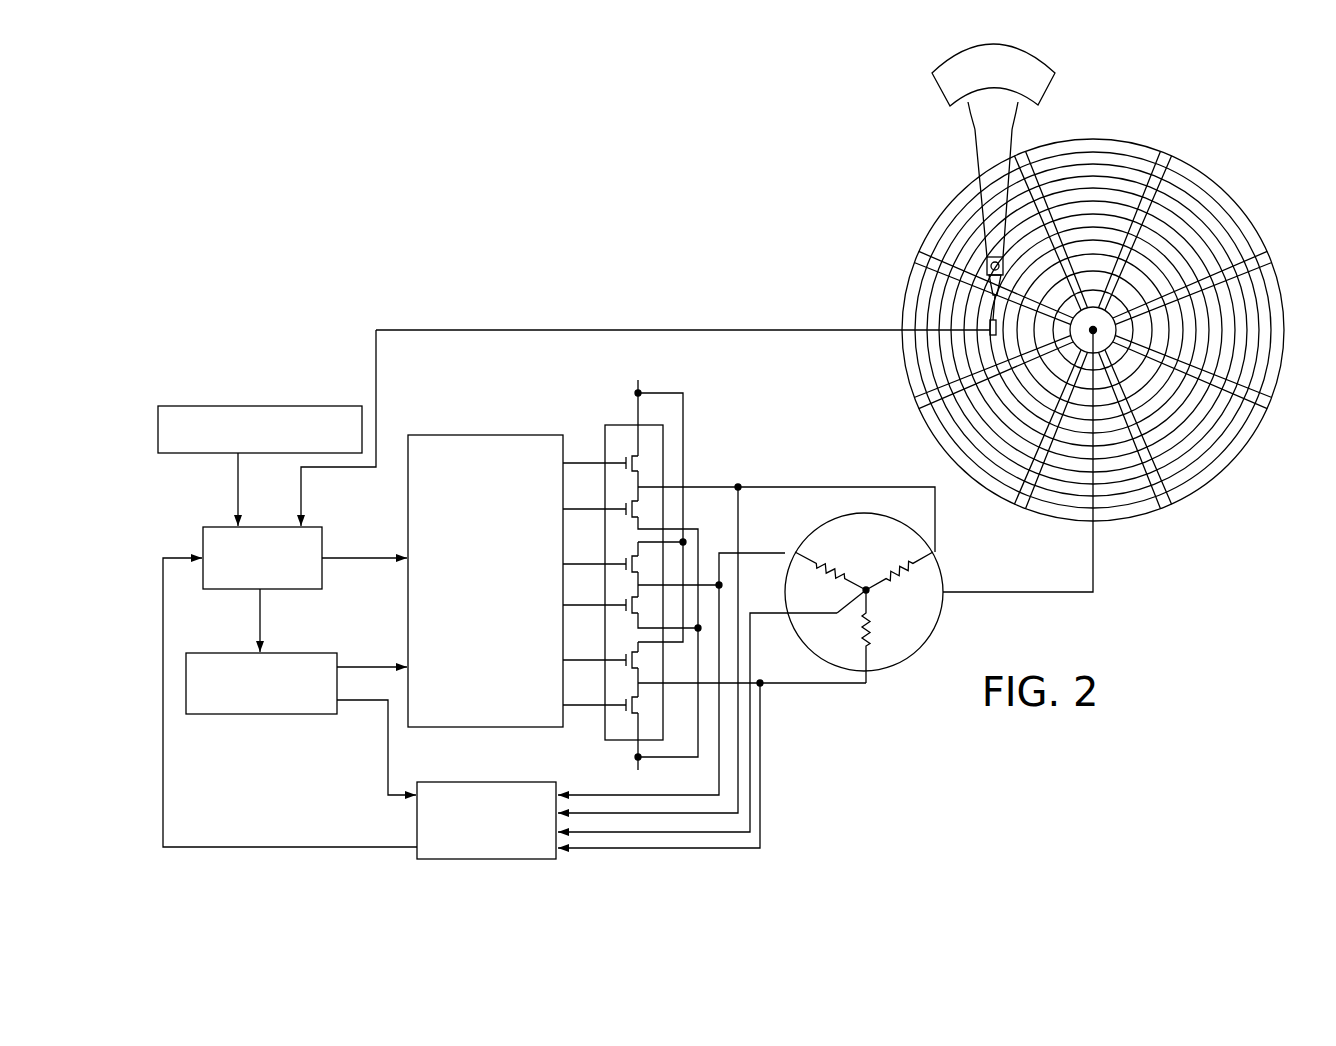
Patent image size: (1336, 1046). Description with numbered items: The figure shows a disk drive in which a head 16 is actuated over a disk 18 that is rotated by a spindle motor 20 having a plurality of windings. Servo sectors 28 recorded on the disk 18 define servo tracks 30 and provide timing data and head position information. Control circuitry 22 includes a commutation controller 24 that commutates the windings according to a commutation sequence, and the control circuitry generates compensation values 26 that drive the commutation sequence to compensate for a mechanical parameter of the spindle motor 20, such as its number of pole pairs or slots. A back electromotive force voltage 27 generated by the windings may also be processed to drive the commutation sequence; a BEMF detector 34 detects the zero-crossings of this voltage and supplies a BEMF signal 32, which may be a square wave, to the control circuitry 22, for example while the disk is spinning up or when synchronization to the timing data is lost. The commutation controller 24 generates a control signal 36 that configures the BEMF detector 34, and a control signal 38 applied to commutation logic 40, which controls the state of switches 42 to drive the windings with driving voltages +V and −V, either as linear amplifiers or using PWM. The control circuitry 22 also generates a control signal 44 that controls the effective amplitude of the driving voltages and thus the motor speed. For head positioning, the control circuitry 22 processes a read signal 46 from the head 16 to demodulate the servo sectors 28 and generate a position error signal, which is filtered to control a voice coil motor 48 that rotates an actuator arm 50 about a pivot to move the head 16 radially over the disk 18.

The head 16 is at (999, 331).
The disk 18 is at (1226, 181).
The spindle motor 20 is at (946, 615).
The control circuitry 22 is at (302, 590).
The commutation controller 24 is at (262, 715).
The compensation values 26 is at (203, 457).
The back electromotive force voltage 27 is at (599, 856).
The servo sectors 28 is at (1164, 155).
The servo tracks 30 is at (1091, 160).
The BEMF signal 32 is at (294, 845).
The BEMF detector 34 is at (487, 782).
The control signal 36 is at (388, 745).
The control signal 38 is at (367, 663).
The commutation logic 40 is at (485, 434).
The switches 42 is at (620, 425).
The control signal 44 is at (359, 555).
The read signal 46 is at (732, 328).
The voice coil motor 48 is at (950, 106).
The actuator arm 50 is at (977, 166).